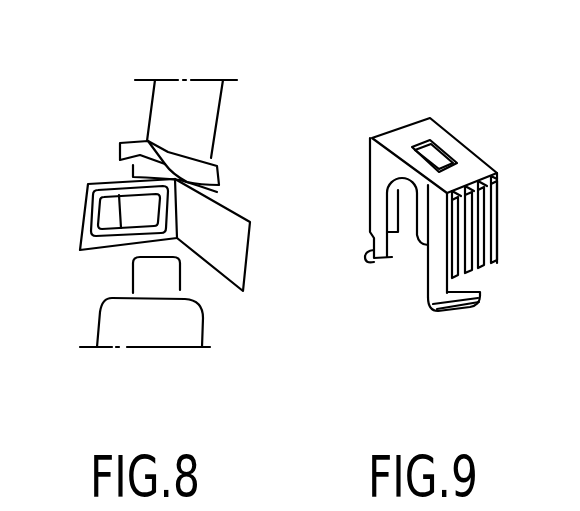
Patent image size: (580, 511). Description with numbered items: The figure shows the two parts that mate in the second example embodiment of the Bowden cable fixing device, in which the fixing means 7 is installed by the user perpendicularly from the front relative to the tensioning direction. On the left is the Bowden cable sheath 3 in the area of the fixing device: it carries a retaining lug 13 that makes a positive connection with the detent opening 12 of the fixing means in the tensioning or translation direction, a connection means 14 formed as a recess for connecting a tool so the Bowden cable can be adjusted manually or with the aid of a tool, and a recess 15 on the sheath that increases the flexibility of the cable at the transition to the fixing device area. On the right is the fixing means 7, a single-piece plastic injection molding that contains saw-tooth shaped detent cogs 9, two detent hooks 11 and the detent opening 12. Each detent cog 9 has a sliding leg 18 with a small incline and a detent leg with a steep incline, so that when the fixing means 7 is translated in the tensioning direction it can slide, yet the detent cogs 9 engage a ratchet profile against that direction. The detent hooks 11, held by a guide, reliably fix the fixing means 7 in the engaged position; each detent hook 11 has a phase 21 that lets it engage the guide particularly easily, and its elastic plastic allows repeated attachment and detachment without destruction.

In FIG. 8, the Bowden cable sheath 3 is at (142, 326).
In FIG. 8, the retaining lug 13 is at (143, 143).
In FIG. 8, the connection means 14 is at (137, 210).
In FIG. 8, the recess 15 is at (168, 278).
In FIG. 9, the fixing means 7 is at (428, 309).
In FIG. 9, the detent cogs 9 is at (496, 246).
In FIG. 9, the detent hooks 11 is at (434, 296).
In FIG. 9, the detent opening 12 is at (423, 147).
In FIG. 9, the sliding leg 18 is at (463, 254).
In FIG. 9, the phase 21 is at (364, 258).